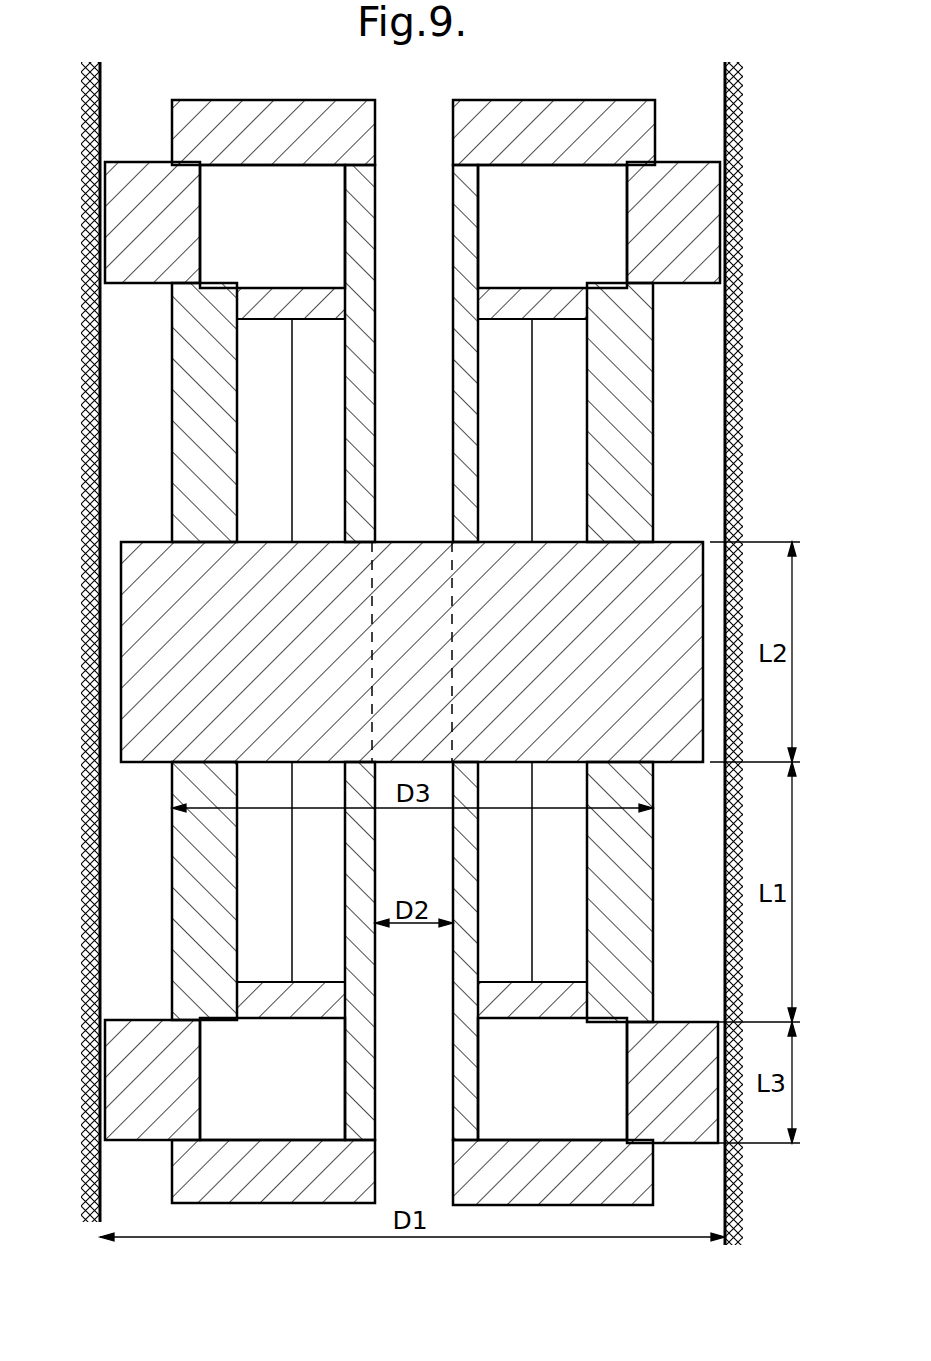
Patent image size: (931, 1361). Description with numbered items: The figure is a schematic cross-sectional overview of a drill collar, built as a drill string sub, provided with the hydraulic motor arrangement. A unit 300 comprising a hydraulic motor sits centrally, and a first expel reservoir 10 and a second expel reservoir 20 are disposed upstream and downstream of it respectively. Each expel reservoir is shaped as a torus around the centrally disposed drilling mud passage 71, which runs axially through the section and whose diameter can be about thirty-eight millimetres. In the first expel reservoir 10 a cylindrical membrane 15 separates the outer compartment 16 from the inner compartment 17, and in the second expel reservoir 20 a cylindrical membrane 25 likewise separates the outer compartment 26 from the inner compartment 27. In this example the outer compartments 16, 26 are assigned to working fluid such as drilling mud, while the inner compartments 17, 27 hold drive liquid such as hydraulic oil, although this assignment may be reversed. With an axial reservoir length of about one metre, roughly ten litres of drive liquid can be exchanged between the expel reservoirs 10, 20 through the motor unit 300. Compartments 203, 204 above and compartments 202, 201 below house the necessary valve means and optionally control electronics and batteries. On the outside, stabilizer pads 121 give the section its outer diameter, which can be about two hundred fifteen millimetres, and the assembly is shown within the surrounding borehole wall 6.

The housing wall 6 is at (100, 296).
The stabilizer pads 121 is at (712, 190).
The first expel reservoir 10 is at (476, 321).
The compartment 203 is at (296, 241).
The compartment 204 is at (574, 241).
The drilling mud passage 71 is at (429, 233).
The cylindrical membrane 15 is at (292, 493).
The outer compartment 16 is at (278, 364).
The inner compartment 17 is at (334, 364).
The unit comprising a hydraulic motor 300 is at (137, 663).
The second expel reservoir 20 is at (336, 983).
The compartment 202 is at (296, 1093).
The compartment 201 is at (574, 1093).
The cylindrical membrane 25 is at (292, 936).
The outer compartment 26 is at (278, 856).
The inner compartment 27 is at (334, 856).